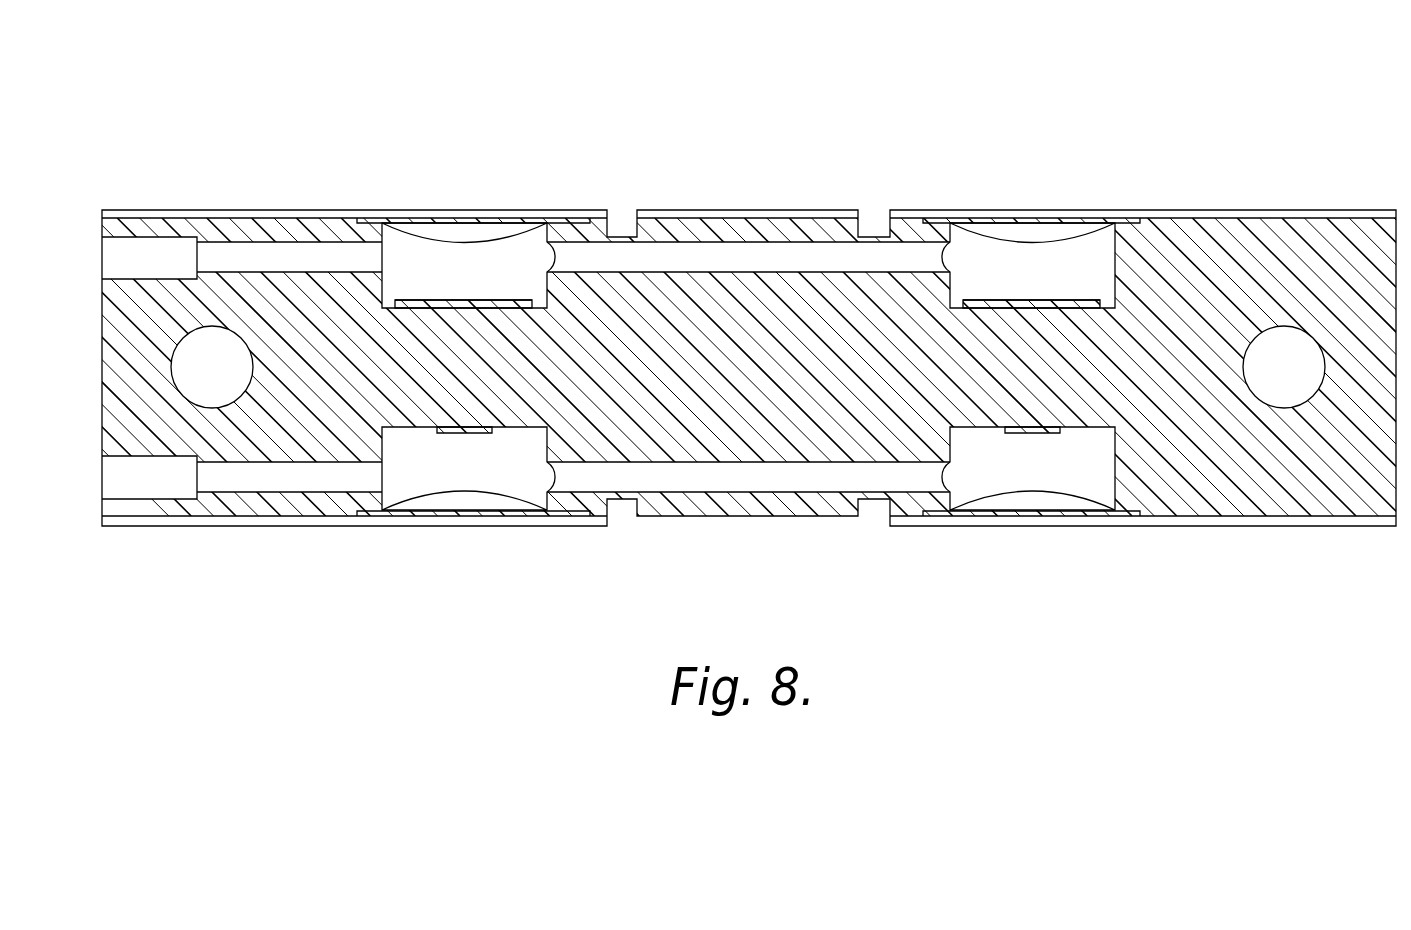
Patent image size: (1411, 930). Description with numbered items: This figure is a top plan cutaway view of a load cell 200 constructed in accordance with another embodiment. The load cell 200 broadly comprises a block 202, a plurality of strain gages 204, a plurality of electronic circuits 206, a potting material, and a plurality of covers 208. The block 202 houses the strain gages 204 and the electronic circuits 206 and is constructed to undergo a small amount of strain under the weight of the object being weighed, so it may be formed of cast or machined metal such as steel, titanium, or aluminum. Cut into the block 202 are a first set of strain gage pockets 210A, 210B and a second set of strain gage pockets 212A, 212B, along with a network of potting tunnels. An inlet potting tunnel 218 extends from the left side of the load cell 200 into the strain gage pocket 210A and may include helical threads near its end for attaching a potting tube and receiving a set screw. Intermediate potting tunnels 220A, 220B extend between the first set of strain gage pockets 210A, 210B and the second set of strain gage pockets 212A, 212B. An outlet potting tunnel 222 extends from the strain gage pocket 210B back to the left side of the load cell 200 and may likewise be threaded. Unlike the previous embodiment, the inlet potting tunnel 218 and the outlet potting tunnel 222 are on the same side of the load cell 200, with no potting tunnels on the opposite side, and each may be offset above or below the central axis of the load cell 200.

The load cell 200 is at (955, 62).
The block 202 is at (1306, 205).
The strain gages 204 is at (455, 300).
The electronic circuits 206 is at (498, 300).
The covers 208 is at (544, 218).
The strain gage pocket 210A is at (434, 489).
The strain gage pocket 210B is at (416, 245).
The strain gage pocket 212A is at (1065, 480).
The strain gage pocket 212B is at (1076, 250).
The inlet potting tunnel 218 is at (225, 482).
The intermediate potting tunnel 220A is at (715, 482).
The intermediate potting tunnel 220B is at (694, 258).
The outlet potting tunnel 222 is at (148, 258).